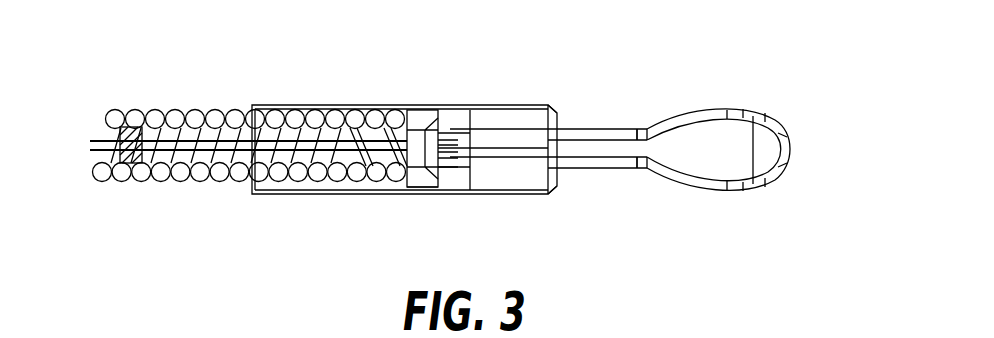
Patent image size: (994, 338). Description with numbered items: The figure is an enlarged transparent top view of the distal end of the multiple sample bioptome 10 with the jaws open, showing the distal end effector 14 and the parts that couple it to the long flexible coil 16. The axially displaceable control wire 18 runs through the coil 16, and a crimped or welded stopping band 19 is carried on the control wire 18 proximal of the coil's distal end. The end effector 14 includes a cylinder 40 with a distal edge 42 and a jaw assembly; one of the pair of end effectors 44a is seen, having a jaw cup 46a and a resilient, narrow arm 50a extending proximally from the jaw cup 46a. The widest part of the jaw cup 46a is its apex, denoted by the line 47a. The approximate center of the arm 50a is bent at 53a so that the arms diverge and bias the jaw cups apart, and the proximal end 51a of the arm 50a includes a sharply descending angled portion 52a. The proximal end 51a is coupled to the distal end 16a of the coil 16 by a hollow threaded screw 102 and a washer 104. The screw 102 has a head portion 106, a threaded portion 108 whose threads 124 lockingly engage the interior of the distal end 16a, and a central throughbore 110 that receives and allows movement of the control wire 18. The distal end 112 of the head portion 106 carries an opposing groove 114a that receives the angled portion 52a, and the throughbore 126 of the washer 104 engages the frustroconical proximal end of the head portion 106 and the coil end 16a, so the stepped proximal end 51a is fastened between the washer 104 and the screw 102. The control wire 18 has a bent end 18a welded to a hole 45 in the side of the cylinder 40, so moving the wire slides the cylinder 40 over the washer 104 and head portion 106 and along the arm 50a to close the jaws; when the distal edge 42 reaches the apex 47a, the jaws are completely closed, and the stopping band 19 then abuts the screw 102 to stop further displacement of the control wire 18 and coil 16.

The multiple sample bioptome 10 is at (282, 257).
The distal end effector 14 is at (592, 230).
The flexible coil 16 is at (168, 110).
The distal end of the coil 16a is at (381, 150).
The control wire 18 is at (183, 153).
The bent end of the control wire 18a is at (483, 182).
The stopping band 19 is at (130, 110).
The cylinder 40 is at (275, 105).
The distal edge of the cylinder 42 is at (557, 113).
The end effector 44a is at (703, 97).
The hole in the side of the cylinder 45 is at (489, 178).
The jaw cup 46a is at (787, 133).
The apex of the jaw 47a is at (753, 163).
The resilient arm 50a is at (610, 170).
The proximal end of the arm 51a is at (447, 133).
The angled portion 52a is at (407, 115).
The bend of the arm 53a is at (558, 148).
The threaded screw 102 is at (347, 130).
The washer 104 is at (413, 190).
The head portion of the screw 106 is at (453, 183).
The threaded portion of the screw 108 is at (365, 108).
The throughbore of the screw 110 is at (517, 105).
The distal end of the head portion 112 is at (483, 157).
The groove 114a is at (457, 133).
The threads 124 is at (372, 125).
The throughbore of the washer 126 is at (427, 117).